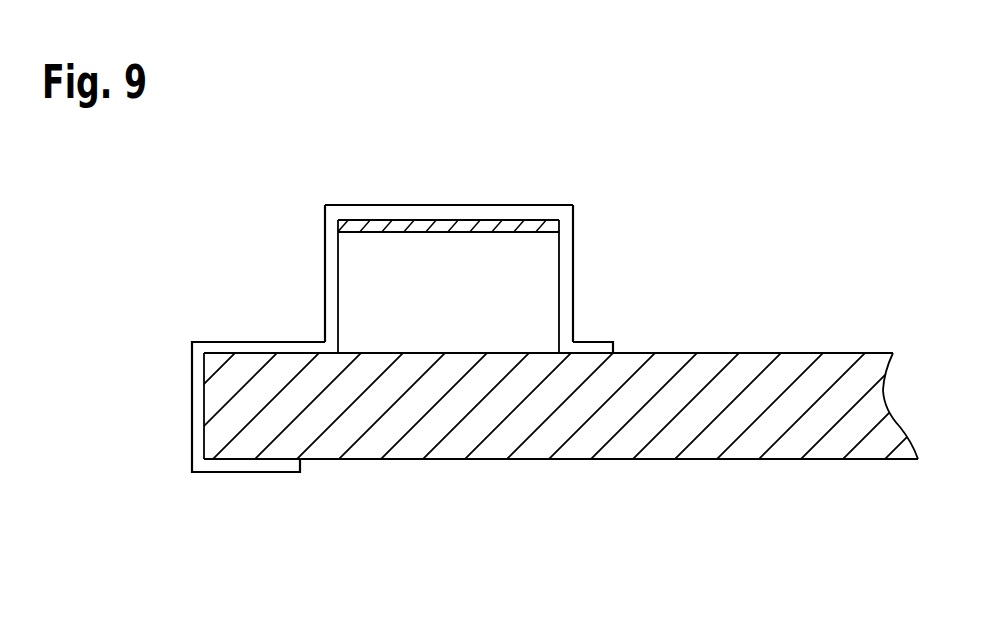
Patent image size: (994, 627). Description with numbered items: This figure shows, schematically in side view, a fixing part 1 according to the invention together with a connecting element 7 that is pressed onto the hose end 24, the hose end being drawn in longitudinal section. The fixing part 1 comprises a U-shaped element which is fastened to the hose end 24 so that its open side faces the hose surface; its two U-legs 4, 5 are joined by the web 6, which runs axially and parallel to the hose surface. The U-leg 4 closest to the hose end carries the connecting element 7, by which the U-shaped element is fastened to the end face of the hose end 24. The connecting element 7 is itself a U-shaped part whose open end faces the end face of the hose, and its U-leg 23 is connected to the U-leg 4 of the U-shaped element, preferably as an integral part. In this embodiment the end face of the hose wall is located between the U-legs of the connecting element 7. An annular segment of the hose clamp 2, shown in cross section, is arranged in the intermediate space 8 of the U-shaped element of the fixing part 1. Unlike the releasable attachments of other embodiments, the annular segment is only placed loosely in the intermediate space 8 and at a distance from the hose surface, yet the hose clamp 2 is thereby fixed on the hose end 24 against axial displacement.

The fixing part 1 is at (293, 198).
The hose clamp 2 is at (453, 227).
The U-leg 4 is at (332, 296).
The U-leg 5 is at (567, 297).
The web 6 is at (497, 213).
The connecting element 7 is at (155, 442).
The intermediate space 8 is at (408, 250).
The U-leg of the connecting element 23 is at (215, 345).
The hose end 24 is at (790, 443).